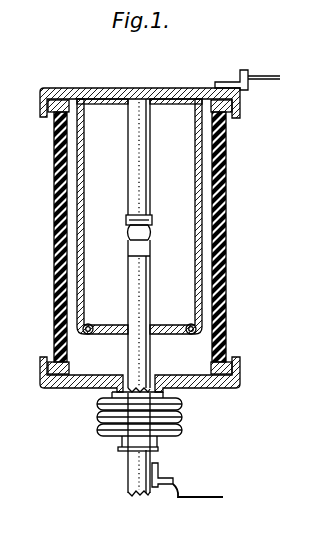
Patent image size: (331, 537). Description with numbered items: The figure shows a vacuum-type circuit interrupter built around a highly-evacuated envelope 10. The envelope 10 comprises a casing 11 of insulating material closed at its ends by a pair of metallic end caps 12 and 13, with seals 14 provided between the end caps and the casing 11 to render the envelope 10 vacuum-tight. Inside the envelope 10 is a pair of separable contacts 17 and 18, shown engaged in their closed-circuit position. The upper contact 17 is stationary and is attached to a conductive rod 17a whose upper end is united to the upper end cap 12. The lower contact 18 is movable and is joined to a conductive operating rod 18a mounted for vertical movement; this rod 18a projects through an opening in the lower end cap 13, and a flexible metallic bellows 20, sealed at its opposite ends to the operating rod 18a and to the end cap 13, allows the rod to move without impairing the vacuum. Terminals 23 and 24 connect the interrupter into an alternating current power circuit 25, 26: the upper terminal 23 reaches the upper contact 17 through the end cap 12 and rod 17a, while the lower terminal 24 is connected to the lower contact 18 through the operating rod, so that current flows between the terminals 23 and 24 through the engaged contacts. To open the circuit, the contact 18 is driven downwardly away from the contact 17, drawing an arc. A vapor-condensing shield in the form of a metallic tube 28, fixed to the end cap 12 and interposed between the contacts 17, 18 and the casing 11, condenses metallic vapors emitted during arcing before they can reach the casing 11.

The envelope 10 is at (44, 232).
The casing 11 is at (223, 226).
The upper end cap 12 is at (106, 88).
The lower end cap 13 is at (208, 385).
The seals 14 is at (68, 107).
The upper contact 17 is at (131, 230).
The conductive rod 17a is at (149, 164).
The lower contact 18 is at (137, 245).
The conductive operating rod 18a is at (144, 311).
The flexible metallic bellows 20 is at (102, 418).
The upper terminal 23 is at (226, 82).
The lower terminal 24 is at (171, 478).
The alternating current power circuit 25 is at (275, 76).
The alternating current power circuit 26 is at (205, 497).
The metallic tube 28 is at (80, 293).